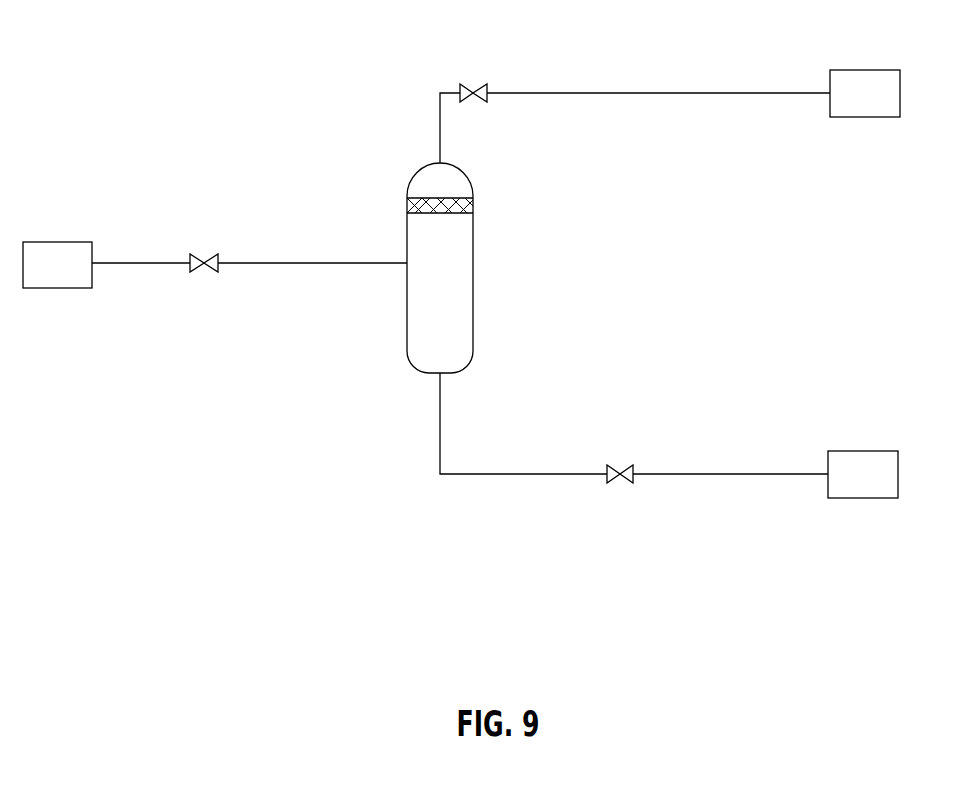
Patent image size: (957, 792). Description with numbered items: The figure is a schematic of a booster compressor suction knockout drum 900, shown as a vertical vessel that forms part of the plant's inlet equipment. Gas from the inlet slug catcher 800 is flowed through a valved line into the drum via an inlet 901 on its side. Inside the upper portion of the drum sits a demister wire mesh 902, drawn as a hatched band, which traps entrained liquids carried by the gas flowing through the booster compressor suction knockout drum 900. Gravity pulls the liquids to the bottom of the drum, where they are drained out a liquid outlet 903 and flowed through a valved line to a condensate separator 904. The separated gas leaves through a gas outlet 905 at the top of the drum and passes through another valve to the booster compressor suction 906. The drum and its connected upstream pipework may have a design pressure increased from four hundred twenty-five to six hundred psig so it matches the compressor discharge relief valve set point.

The inlet slug catcher 800 is at (57, 265).
The booster compressor suction knockout drum 900 is at (410, 178).
The inlet 901 is at (407, 265).
The demister wire mesh 902 is at (407, 205).
The liquid outlet 903 is at (443, 375).
The condensate separator 904 is at (863, 474).
The gas outlet 905 is at (438, 160).
The booster compressor suction 906 is at (865, 93).